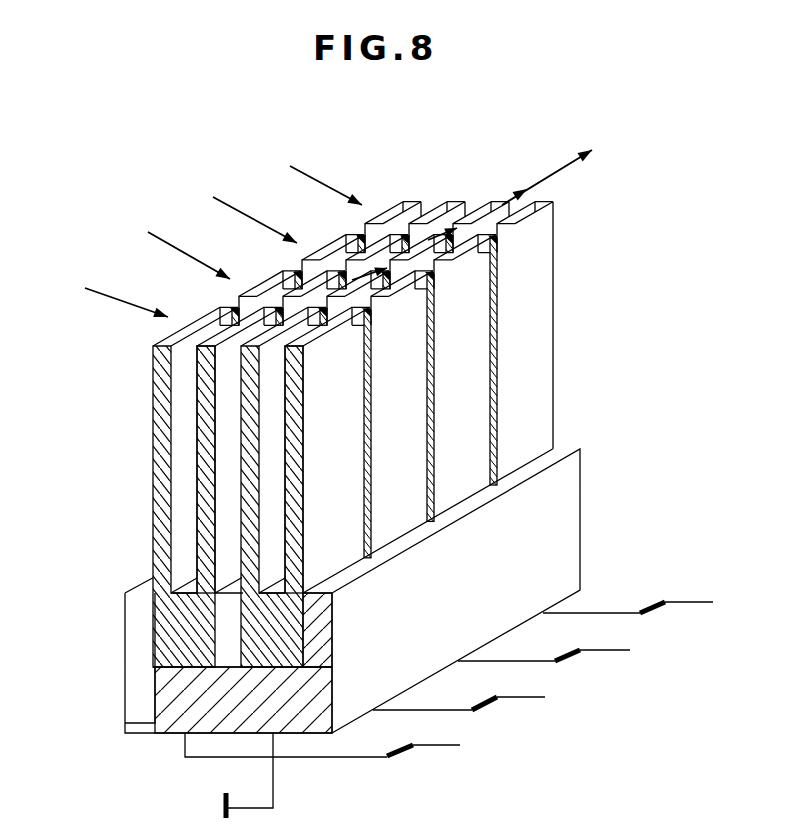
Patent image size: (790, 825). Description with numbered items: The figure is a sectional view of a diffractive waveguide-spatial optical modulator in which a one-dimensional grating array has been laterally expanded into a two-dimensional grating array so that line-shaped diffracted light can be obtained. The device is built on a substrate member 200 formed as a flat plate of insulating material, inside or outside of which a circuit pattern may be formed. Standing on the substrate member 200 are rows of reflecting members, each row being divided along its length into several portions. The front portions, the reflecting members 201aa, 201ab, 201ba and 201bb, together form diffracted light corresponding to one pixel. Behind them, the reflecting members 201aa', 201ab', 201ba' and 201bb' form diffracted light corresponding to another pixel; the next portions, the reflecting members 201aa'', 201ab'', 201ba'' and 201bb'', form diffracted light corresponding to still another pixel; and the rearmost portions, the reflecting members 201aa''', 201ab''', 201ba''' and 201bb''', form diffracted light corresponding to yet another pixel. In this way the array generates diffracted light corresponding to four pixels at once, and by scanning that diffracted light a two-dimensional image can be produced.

The substrate member 200 is at (563, 492).
The reflecting member 201aa is at (234, 434).
The reflecting member 201ab is at (250, 397).
The reflecting member 201ba is at (278, 434).
The reflecting member 201bb is at (294, 397).
The reflecting member 201aa' is at (195, 241).
The reflecting member 201aa'' is at (276, 197).
The reflecting member 201aa''' is at (373, 164).
The reflecting member 201ab' is at (239, 228).
The reflecting member 201ab'' is at (320, 184).
The reflecting member 201ab''' is at (436, 176).
The reflecting member 201ba' is at (501, 289).
The reflecting member 201ba'' is at (539, 246).
The reflecting member 201ba''' is at (572, 201).
The reflecting member 201bb' is at (513, 304).
The reflecting member 201bb'' is at (551, 260).
The reflecting member 201bb''' is at (584, 216).